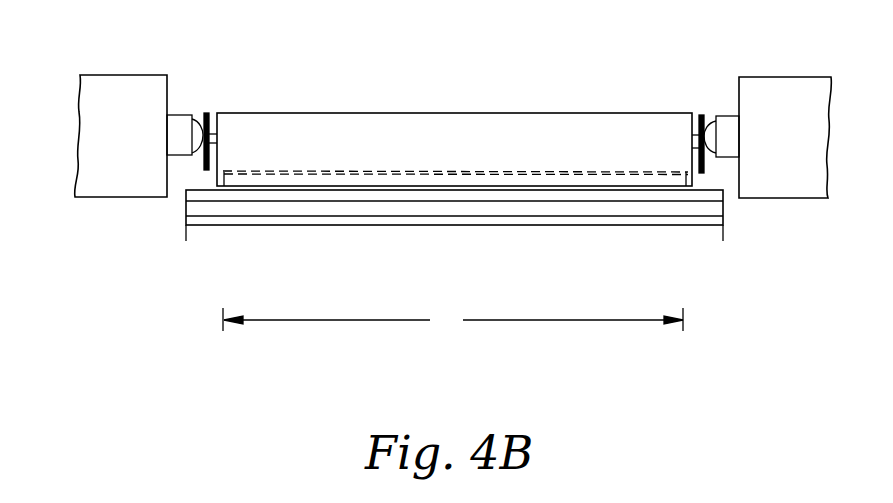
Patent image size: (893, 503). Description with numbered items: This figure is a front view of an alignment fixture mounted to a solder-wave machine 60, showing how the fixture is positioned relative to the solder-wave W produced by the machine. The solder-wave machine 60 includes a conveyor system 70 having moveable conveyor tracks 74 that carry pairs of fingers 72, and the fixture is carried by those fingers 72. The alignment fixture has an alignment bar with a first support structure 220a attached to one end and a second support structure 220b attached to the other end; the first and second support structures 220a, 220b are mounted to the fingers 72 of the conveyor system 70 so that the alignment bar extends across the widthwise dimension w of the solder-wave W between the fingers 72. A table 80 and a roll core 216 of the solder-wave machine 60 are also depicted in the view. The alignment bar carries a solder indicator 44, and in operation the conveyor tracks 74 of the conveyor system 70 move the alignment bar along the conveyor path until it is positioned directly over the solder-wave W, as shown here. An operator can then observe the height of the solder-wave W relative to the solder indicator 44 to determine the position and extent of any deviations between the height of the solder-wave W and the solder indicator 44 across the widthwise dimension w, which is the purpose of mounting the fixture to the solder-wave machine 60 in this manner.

The solder-wave machine 60 is at (753, 219).
The conveyor system 70 is at (184, 107).
The fingers 72 is at (197, 148).
The conveyor tracks 74 is at (178, 129).
The table 80 is at (186, 207).
The roll core 216 is at (490, 75).
The first support structure 220a is at (207, 167).
The second support structure 220b is at (702, 173).
The solder indicator 44 is at (305, 171).
The solder-wave W is at (338, 174).
The widthwise dimension w is at (453, 321).